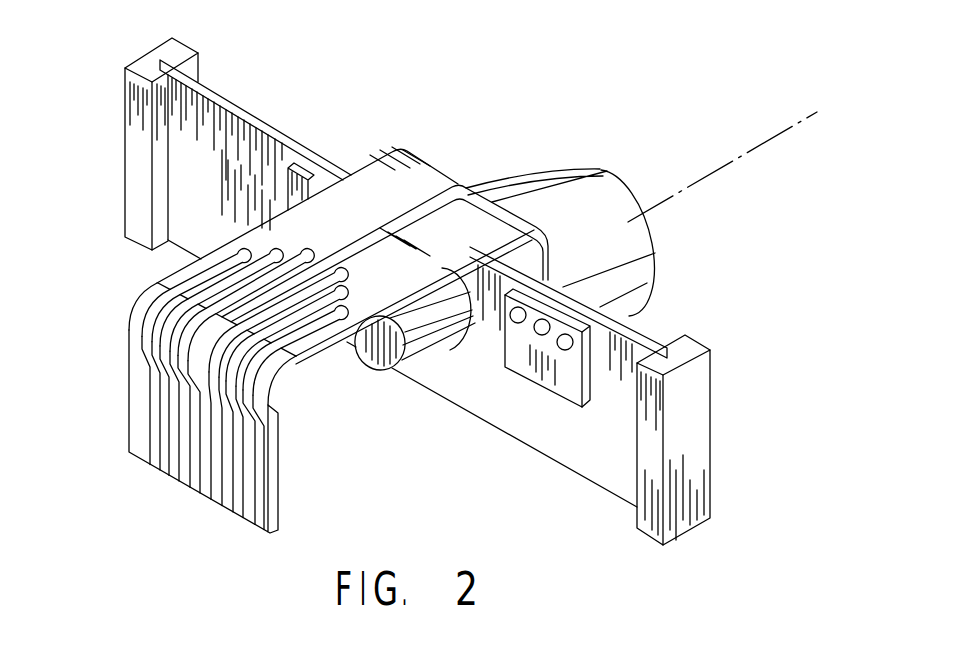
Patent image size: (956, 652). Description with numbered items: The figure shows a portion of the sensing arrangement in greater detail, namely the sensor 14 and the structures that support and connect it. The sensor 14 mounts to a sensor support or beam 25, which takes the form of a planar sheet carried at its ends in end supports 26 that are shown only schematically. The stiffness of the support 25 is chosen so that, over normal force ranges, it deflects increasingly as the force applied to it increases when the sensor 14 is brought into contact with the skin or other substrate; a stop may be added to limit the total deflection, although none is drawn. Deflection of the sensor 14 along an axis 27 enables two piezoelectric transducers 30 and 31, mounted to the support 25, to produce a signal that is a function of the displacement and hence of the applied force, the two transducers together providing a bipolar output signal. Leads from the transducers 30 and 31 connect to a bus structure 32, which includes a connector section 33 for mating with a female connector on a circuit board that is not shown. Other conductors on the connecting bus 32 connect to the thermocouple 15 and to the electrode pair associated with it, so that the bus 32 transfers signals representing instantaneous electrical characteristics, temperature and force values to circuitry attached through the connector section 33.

The sensor 14 is at (530, 178).
The thermocouple 15 is at (415, 338).
The sensor support or beam 25 is at (630, 328).
The end supports 26 is at (147, 63).
The axis 27 is at (770, 132).
The piezoelectric transducer 30 is at (546, 376).
The piezoelectric transducer 31 is at (288, 187).
The bus structure 32 is at (322, 360).
The connector section 33 is at (130, 383).